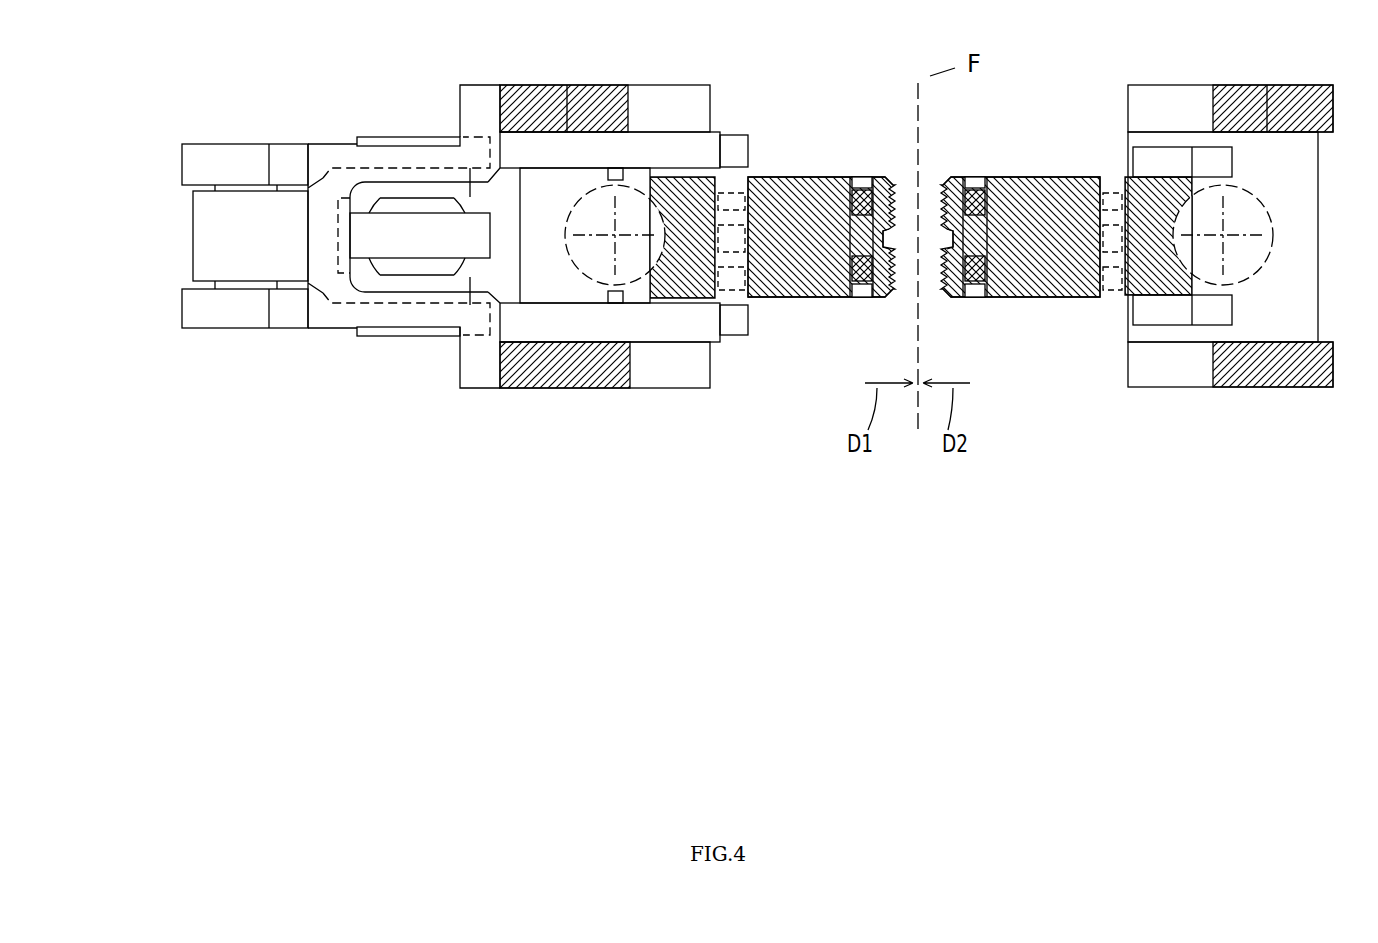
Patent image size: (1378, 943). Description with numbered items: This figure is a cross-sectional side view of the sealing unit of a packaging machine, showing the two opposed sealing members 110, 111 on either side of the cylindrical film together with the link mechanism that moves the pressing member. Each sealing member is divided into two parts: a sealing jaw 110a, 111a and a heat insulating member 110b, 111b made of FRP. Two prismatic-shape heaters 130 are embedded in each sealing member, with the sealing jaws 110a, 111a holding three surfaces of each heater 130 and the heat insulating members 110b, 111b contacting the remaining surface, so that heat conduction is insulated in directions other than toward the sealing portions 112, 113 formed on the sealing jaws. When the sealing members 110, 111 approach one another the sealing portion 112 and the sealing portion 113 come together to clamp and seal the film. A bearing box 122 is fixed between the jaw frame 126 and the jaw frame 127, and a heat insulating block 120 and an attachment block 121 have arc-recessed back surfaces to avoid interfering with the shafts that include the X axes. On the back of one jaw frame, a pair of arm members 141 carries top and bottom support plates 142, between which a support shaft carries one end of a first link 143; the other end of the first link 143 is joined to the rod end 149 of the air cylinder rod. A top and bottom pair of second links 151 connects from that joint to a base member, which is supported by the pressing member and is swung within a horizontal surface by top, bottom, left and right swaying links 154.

The sealing member 110 is at (832, 203).
The sealing jaw 110a is at (883, 177).
The heat insulating member 110b is at (780, 177).
The sealing member 111 is at (1011, 205).
The sealing jaw 111a is at (968, 180).
The heat insulating member 111b is at (1043, 180).
The sealing portion 112 is at (893, 283).
The sealing portion 113 is at (943, 283).
The heat insulating block 120 is at (677, 180).
The attachment block 121 is at (623, 177).
The bearing box 122 is at (550, 177).
The jaw frame 126 is at (516, 90).
The jaw frame 127 is at (521, 388).
The heater 130 is at (855, 264).
The arm member 141 is at (327, 143).
The support plate 142 is at (207, 152).
The first link 143 is at (203, 232).
The rod end 149 is at (412, 227).
The second link 151 is at (397, 137).
The swaying link 154 is at (712, 142).